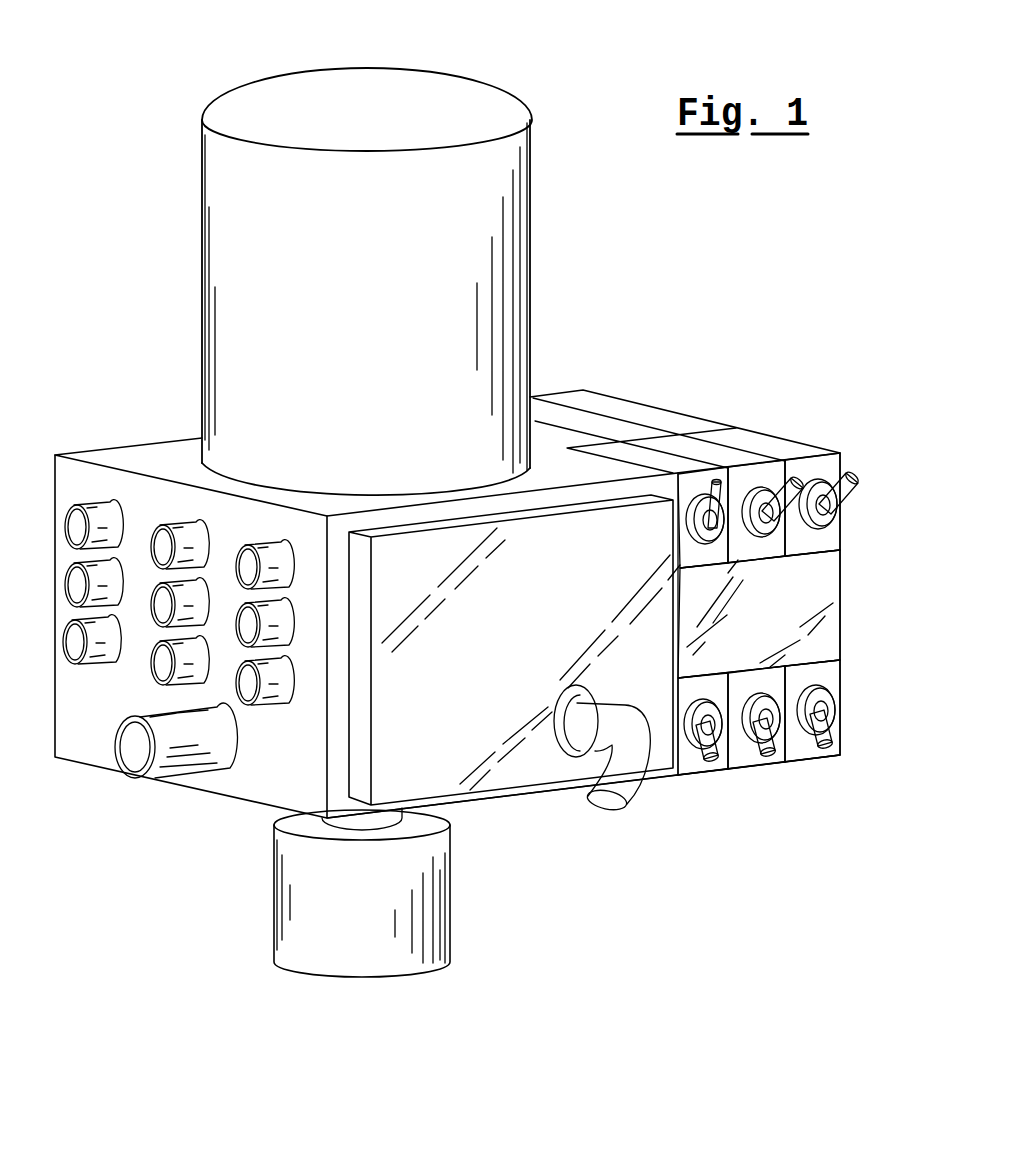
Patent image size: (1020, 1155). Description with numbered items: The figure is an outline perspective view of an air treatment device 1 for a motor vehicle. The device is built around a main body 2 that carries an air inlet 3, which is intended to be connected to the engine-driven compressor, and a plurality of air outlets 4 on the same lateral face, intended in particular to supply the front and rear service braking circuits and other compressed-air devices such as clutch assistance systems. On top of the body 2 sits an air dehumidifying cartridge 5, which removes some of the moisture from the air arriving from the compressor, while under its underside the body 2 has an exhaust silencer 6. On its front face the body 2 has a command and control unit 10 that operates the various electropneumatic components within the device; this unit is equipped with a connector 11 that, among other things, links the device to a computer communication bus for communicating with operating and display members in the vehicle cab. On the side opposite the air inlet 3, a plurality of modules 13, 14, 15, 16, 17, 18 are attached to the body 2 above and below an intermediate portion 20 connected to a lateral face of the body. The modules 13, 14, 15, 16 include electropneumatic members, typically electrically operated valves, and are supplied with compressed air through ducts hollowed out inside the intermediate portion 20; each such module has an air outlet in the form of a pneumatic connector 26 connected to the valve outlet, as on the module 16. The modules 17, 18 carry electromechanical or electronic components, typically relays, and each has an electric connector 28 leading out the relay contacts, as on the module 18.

The air treatment device 1 is at (693, 1000).
The main body 2 is at (147, 457).
The air inlet 3 is at (131, 752).
The air outlets 4 is at (162, 606).
The air dehumidifying cartridge 5 is at (427, 107).
The exhaust silencer 6 is at (362, 930).
The command and control unit 10 is at (483, 748).
The connector 11 is at (618, 778).
The module 13 is at (687, 762).
The module 14 is at (742, 753).
The module 15 is at (803, 753).
The module 16 is at (612, 452).
The module 17 is at (695, 452).
The module 18 is at (772, 447).
The intermediate portion 20 is at (830, 586).
The pneumatic connector 26 is at (686, 538).
The electric connector 28 is at (833, 523).